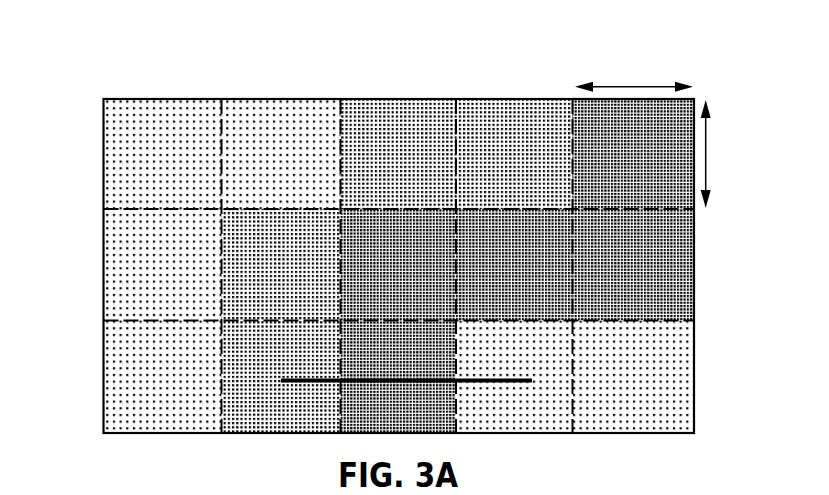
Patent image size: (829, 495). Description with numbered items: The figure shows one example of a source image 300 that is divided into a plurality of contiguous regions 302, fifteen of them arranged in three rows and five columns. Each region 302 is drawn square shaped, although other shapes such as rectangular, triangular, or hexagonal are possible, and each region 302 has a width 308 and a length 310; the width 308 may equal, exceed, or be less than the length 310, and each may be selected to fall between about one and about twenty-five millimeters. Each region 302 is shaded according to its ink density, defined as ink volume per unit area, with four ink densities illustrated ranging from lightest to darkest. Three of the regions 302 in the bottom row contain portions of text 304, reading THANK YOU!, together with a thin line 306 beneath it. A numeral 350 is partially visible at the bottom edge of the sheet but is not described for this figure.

The source image 300 is at (163, 58).
The regions 302 is at (663, 198).
The text 304 is at (268, 347).
The thin line 306 is at (265, 377).
The width 308 is at (627, 84).
The length 310 is at (707, 153).
The display content grid (next figure) 350 is at (104, 491).